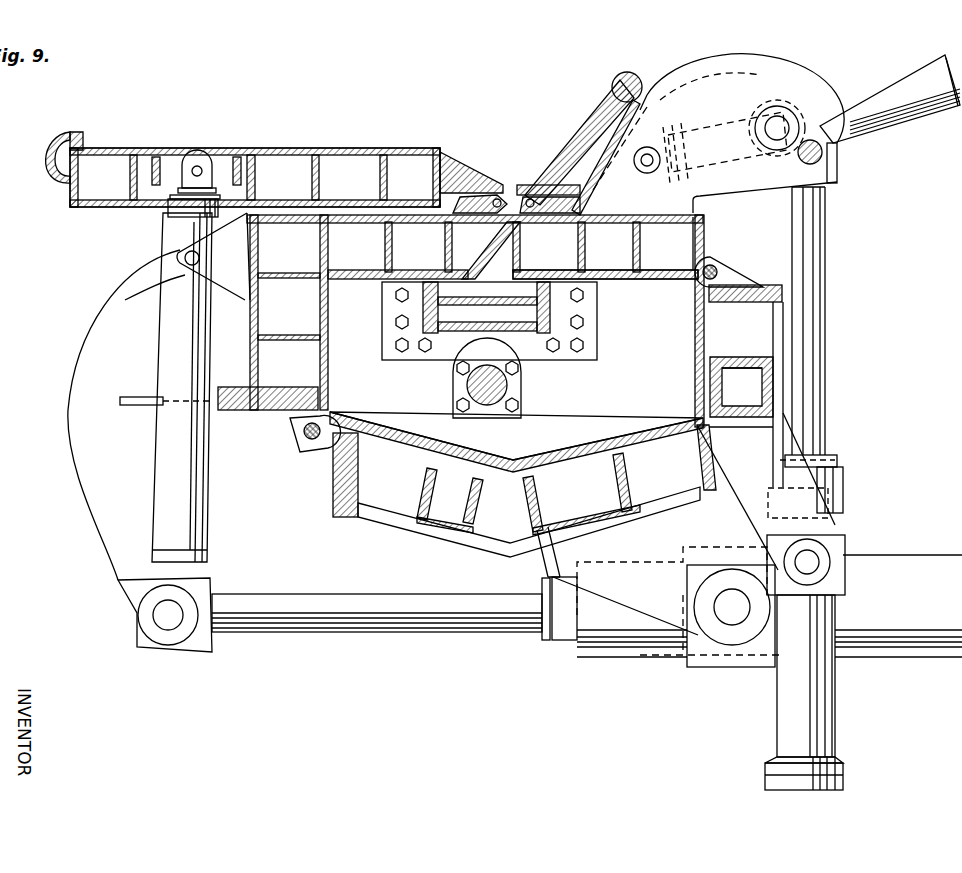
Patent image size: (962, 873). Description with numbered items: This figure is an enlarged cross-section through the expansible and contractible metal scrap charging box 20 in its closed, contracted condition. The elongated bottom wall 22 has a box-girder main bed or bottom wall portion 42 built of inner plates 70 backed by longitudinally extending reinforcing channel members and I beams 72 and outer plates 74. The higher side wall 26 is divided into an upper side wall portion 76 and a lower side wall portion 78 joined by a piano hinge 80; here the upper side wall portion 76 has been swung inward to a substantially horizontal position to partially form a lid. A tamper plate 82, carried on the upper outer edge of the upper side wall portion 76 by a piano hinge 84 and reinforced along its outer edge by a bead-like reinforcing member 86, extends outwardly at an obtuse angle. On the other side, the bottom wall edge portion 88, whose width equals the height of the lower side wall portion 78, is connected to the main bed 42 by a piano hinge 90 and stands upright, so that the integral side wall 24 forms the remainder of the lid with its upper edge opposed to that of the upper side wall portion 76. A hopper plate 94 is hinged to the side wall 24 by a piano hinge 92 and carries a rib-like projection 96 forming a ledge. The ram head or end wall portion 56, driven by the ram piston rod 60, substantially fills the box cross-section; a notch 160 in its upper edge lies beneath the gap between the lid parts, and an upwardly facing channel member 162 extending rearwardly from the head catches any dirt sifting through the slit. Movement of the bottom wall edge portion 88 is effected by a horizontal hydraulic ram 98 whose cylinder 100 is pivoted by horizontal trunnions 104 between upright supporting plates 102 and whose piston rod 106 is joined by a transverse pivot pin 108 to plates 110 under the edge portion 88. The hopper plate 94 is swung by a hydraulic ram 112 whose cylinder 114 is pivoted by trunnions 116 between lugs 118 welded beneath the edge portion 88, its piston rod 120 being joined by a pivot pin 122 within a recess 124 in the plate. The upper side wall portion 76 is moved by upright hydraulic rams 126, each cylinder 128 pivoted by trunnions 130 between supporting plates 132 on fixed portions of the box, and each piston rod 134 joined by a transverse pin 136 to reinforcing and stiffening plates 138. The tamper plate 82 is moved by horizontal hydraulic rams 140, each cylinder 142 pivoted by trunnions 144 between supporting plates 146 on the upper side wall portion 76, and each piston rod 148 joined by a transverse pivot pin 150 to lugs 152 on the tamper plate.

The metal scrap charging box 20 is at (412, 147).
The bottom wall 22 is at (540, 457).
The side wall 24 is at (372, 282).
The side wall 26 is at (697, 345).
The main bed or bottom wall portion 42 is at (428, 437).
The end wall portion or ram head 56 is at (662, 384).
The ram piston rod 60 is at (522, 390).
The inner plates 70 is at (420, 462).
The reinforcing channel members and I beams 72 is at (530, 520).
The outer plates 74 is at (440, 538).
The upper side wall portion 76 is at (630, 282).
The lower side wall portion 78 is at (700, 368).
The piano hinge 80 is at (718, 262).
The tamper plate 82 is at (585, 140).
The piano hinge 84 is at (532, 198).
The bead-like reinforcing member 86 is at (635, 73).
The bottom wall edge portion 88 is at (328, 353).
The piano hinge 90 is at (300, 450).
The piano hinge 92 is at (495, 198).
The hopper plate 94 is at (290, 150).
The rib-like projection 96 is at (72, 140).
The hydraulic ram 98 is at (650, 672).
The cylinder 100 is at (922, 655).
The upright supporting plates 102 is at (628, 612).
The horizontal trunnions 104 is at (730, 625).
The piston rod 106 is at (455, 635).
The transverse pivot pin 108 is at (168, 620).
The plates 110 is at (110, 565).
The hydraulic ram 112 is at (160, 330).
The cylinder 114 is at (160, 443).
The trunnions 116 is at (185, 258).
The lugs 118 is at (125, 290).
The piston rod 120 is at (192, 207).
The pivot pin 122 is at (198, 166).
The recess 124 is at (155, 203).
The hydraulic rams 126 is at (842, 736).
The cylinder 128 is at (775, 722).
The trunnions 130 is at (810, 565).
The supporting plates 132 is at (828, 482).
The piston rod 134 is at (826, 358).
The transverse pin 136 is at (822, 155).
The reinforcing and stiffening plates 138 is at (780, 92).
The hydraulic rams 140 is at (905, 62).
The cylinder 142 is at (915, 125).
The trunnions 144 is at (770, 115).
The supporting plates 146 is at (710, 78).
The piston rod 148 is at (655, 125).
The transverse pivot pin 150 is at (658, 181).
The lugs 152 is at (612, 200).
The notch 160 is at (510, 293).
The channel member 162 is at (392, 298).